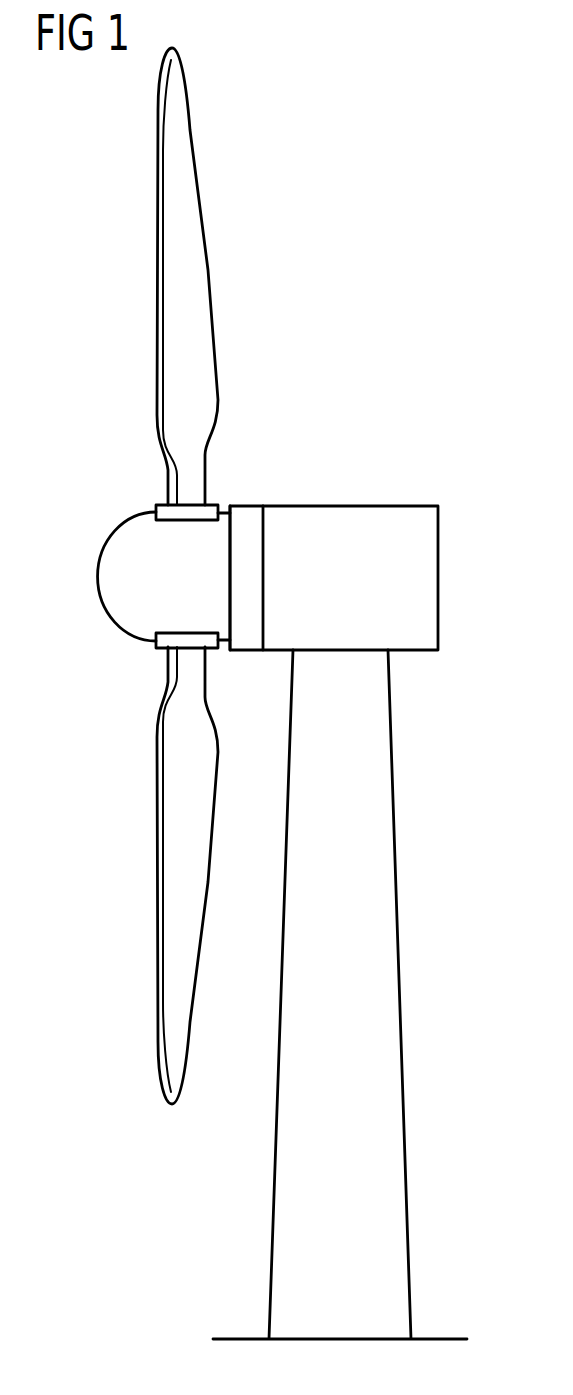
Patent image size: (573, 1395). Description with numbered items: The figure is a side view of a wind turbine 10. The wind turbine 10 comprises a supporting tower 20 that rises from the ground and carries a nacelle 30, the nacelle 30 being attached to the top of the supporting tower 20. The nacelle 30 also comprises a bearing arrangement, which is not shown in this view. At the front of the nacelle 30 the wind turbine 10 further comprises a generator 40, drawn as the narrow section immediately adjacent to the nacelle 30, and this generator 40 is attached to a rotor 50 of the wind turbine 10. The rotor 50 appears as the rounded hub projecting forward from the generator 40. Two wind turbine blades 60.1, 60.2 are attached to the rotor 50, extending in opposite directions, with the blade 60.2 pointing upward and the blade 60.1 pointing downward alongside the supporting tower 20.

The wind turbine 10 is at (447, 389).
The supporting tower 20 is at (386, 977).
The nacelle 30 is at (384, 516).
The generator 40 is at (249, 515).
The rotor 50 is at (110, 572).
The wind turbine blade 60.1 is at (178, 858).
The wind turbine blade 60.2 is at (180, 291).